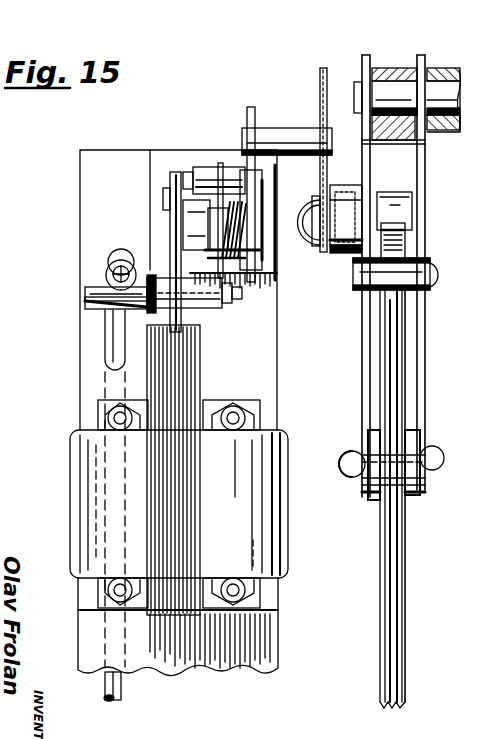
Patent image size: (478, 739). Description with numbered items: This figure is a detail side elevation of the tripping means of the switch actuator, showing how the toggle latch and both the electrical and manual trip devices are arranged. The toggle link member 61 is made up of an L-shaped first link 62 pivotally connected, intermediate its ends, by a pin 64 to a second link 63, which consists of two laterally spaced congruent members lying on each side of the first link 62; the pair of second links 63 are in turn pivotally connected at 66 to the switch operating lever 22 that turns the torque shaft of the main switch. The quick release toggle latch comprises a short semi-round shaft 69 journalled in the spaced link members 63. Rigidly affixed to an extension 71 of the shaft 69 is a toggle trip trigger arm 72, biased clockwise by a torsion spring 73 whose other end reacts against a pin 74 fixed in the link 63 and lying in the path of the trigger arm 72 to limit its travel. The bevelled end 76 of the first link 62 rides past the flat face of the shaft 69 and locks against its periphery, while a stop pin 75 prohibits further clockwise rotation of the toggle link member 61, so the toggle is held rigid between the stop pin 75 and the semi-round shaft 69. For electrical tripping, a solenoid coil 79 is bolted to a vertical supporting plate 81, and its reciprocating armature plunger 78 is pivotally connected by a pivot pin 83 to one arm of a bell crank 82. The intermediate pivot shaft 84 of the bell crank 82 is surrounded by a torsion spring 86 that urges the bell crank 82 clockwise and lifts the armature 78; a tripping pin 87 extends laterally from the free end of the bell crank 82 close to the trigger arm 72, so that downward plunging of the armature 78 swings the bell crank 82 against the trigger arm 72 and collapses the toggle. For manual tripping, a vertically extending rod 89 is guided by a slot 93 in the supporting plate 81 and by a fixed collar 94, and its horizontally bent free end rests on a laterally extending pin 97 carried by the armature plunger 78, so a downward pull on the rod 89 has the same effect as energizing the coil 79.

The switch operating lever 22 is at (390, 68).
The pivotal connection 66 is at (444, 68).
The toggle trip trigger arm 72 is at (320, 98).
The bell crank 82 is at (248, 118).
The tripping pin 87 is at (282, 135).
The pivot pin 83 is at (184, 180).
The torsion spring 86 is at (214, 175).
The torsion spring 73 is at (335, 185).
The semi-round shaft 69 is at (392, 195).
The pin 74 is at (322, 182).
The bevelled end 76 is at (405, 232).
The stop pin 75 is at (432, 275).
The extension 71 is at (348, 252).
The vertical supporting plate 81 is at (117, 197).
The collar 94 is at (126, 264).
The manual trip release rod 89 is at (112, 278).
The pin 97 is at (88, 300).
The slot 93 is at (108, 343).
The pivot shaft 84 is at (213, 256).
The second link 63 is at (362, 345).
The armature plunger 78 is at (186, 368).
The solenoid coil 79 is at (115, 480).
The pin 64 is at (350, 462).
The toggle link member 61 is at (355, 499).
The first link 62 is at (388, 610).